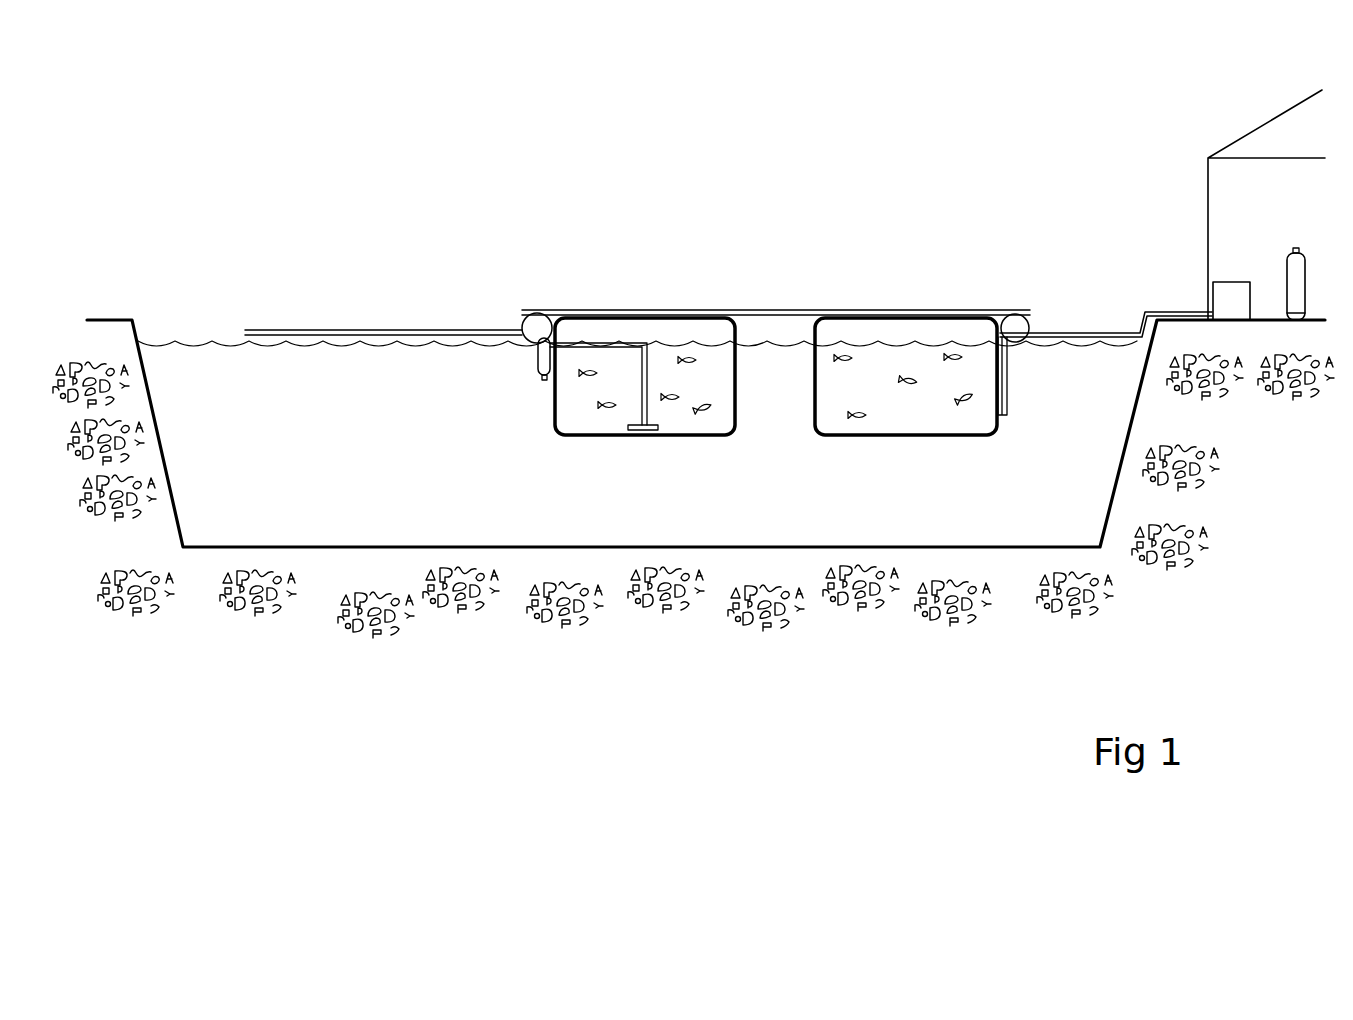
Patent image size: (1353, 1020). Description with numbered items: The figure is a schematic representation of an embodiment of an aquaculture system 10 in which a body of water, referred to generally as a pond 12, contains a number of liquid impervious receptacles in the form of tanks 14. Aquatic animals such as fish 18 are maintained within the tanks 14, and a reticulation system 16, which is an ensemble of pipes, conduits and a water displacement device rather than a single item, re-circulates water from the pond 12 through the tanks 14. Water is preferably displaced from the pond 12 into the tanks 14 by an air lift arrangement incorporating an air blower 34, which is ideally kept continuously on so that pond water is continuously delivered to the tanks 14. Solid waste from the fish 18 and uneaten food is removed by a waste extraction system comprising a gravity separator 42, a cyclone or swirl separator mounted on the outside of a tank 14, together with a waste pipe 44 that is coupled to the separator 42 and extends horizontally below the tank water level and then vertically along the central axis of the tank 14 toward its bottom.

The aquaculture system 10 is at (819, 149).
The pond 12 is at (303, 372).
The tanks 14 is at (745, 362).
The reticulation system 16 is at (400, 330).
The fish 18 is at (690, 360).
The air blower 34 is at (1228, 288).
The gravity separator 42 is at (547, 352).
The waste pipe 44 is at (587, 342).